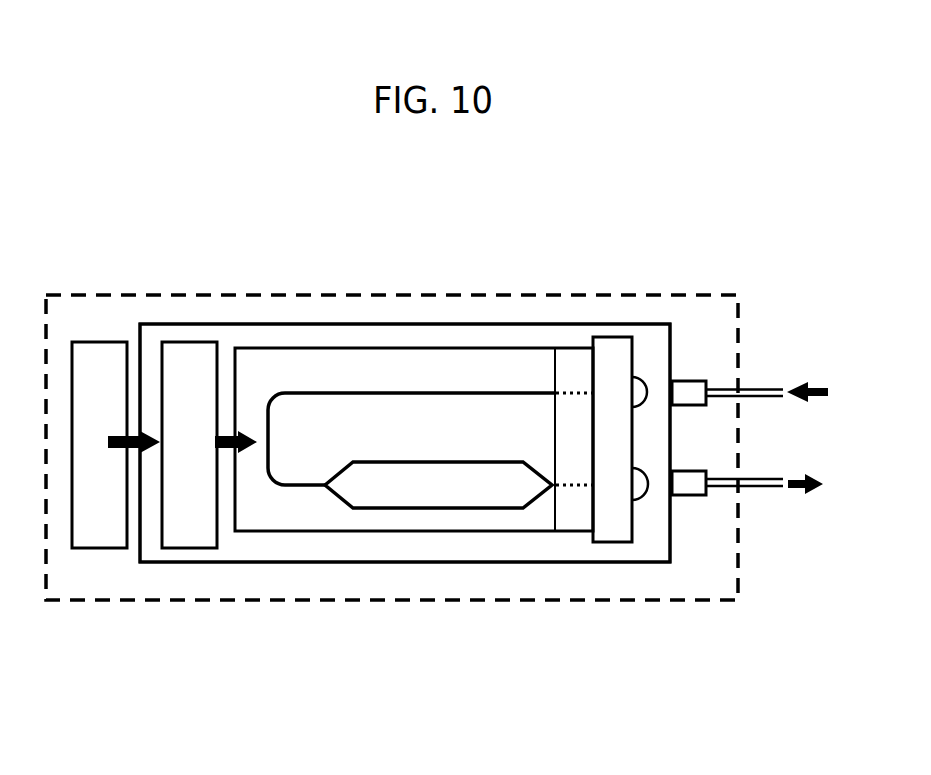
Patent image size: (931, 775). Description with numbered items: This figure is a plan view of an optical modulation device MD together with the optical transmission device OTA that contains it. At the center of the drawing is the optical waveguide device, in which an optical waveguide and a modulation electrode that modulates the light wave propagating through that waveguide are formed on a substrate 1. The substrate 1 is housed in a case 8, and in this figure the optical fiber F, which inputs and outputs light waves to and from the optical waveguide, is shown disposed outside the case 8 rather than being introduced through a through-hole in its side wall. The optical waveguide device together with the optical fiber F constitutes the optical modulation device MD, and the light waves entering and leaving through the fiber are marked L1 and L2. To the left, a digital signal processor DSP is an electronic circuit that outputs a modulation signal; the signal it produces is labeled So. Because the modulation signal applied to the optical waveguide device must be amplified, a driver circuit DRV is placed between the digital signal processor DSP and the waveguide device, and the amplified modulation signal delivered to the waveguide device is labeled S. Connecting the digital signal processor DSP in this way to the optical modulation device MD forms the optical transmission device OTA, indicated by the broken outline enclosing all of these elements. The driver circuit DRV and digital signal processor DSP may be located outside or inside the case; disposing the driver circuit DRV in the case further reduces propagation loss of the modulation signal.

The substrate 1 is at (372, 350).
The case 8 is at (457, 323).
The optical modulation device MD is at (376, 563).
The optical transmission device OTA is at (192, 600).
The digital signal processor DSP is at (95, 343).
The driver circuit DRV is at (187, 343).
The output signal from DSP So is at (123, 428).
The drive signal S is at (236, 427).
The optical fiber F is at (716, 385).
The input light L1 is at (810, 374).
The output light L2 is at (810, 501).